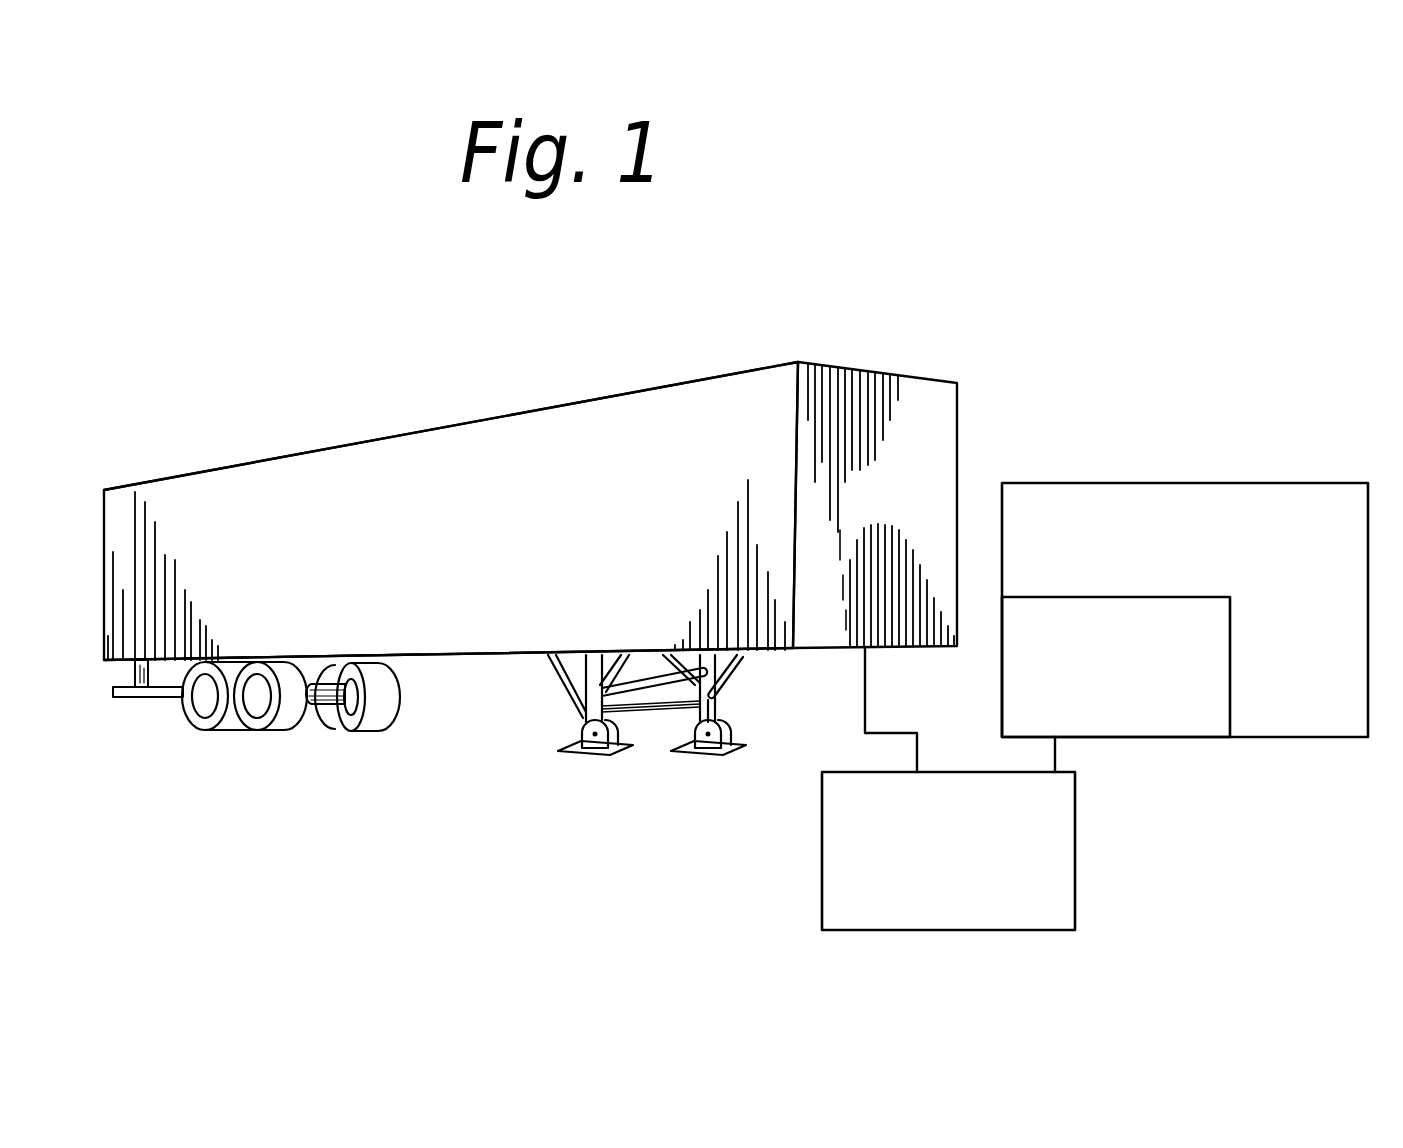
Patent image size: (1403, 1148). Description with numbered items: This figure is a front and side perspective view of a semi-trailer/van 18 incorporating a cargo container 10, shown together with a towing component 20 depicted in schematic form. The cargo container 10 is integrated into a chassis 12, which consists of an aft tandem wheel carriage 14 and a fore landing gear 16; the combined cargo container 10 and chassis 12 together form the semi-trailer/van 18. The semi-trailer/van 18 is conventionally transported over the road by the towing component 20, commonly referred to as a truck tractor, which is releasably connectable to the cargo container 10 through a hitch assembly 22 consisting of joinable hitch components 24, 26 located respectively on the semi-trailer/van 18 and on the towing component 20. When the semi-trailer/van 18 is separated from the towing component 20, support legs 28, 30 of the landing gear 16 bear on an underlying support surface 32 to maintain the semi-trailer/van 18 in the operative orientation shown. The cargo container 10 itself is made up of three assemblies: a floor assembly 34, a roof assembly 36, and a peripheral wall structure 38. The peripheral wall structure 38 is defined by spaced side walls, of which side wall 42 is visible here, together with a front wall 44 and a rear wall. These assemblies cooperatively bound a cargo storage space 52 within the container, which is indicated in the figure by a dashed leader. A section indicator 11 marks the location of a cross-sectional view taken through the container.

The cargo container 10 is at (937, 337).
The section line 11 is at (417, 400).
The chassis 12 is at (482, 658).
The tandem wheel carriage 14 is at (285, 740).
The landing gear 16 is at (728, 707).
The semi-trailer/van 18 is at (437, 705).
The towing component 20 is at (1254, 607).
The hitch assembly 22 is at (1167, 808).
The hitch component 24 is at (925, 902).
The hitch component 26 is at (1096, 712).
The support leg 28 is at (707, 753).
The support leg 30 is at (608, 753).
The support surface 32 is at (498, 773).
The floor assembly 34 is at (418, 662).
The roof assembly 36 is at (602, 393).
The peripheral wall structure 38 is at (935, 463).
The side wall 42 is at (496, 556).
The front wall 44 is at (896, 517).
The cargo storage space 52 is at (830, 463).